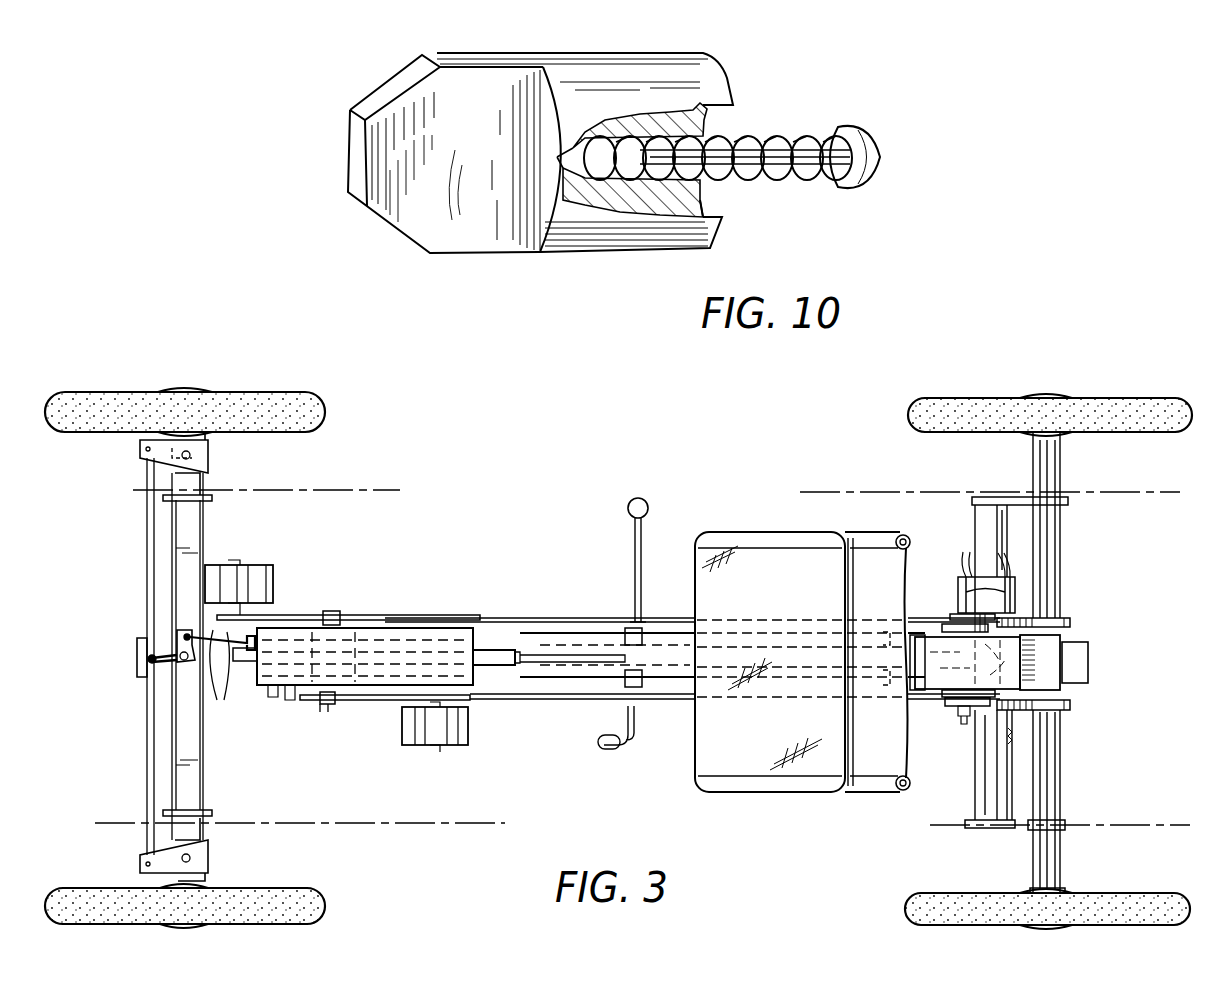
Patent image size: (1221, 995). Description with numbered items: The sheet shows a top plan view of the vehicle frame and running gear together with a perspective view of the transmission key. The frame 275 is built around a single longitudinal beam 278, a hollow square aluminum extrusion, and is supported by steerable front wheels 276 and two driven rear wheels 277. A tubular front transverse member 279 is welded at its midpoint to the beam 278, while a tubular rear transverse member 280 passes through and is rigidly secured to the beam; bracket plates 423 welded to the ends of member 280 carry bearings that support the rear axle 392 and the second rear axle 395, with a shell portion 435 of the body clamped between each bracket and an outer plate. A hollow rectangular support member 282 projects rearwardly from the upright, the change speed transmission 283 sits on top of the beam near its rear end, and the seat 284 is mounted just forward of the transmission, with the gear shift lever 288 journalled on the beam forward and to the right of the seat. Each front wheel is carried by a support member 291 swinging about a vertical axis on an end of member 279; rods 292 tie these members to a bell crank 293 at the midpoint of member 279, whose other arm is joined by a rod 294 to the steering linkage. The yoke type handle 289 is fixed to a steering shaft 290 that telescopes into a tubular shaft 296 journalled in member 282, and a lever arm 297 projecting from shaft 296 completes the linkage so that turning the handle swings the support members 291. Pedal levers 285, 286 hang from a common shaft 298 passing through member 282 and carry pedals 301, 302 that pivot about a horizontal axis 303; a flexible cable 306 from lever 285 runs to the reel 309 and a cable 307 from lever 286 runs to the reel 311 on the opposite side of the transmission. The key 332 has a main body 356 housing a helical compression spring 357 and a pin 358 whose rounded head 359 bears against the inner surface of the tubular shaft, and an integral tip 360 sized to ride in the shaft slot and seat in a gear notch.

In FIG. 10, the main body 356 is at (600, 73).
In FIG. 10, the helical compression spring 357 is at (780, 138).
In FIG. 10, the pin 358 is at (830, 150).
In FIG. 10, the head 359 is at (878, 145).
In FIG. 10, the tip 360 is at (428, 117).
In FIG. 10, the key 332 is at (378, 238).
In FIG. 3, the frame 275 is at (553, 628).
In FIG. 3, the steerable front wheels 276 is at (288, 398).
In FIG. 3, the driven rear wheels 277 is at (1125, 400).
In FIG. 3, the longitudinal beam 278 is at (137, 660).
In FIG. 3, the front transverse member 279 is at (203, 790).
In FIG. 3, the rear transverse member 280 is at (977, 525).
In FIG. 3, the support member 282 is at (435, 628).
In FIG. 3, the change speed transmission 283 is at (912, 690).
In FIG. 3, the seat 284 is at (800, 790).
In FIG. 3, the pedal lever 285 is at (360, 700).
In FIG. 3, the pedal lever 286 is at (302, 614).
In FIG. 3, the gear shift lever 288 is at (635, 528).
In FIG. 3, the yoke type handle 289 is at (605, 750).
In FIG. 3, the steering shaft 290 is at (525, 665).
In FIG. 3, the support member 291 is at (212, 458).
In FIG. 3, the rods 292 is at (147, 512).
In FIG. 3, the bell crank 293 is at (167, 678).
In FIG. 3, the rod 294 is at (222, 660).
In FIG. 3, the tubular shaft 296 is at (492, 650).
In FIG. 3, the lever arm 297 is at (177, 632).
In FIG. 3, the shaft 298 is at (320, 704).
In FIG. 3, the pedal 301 is at (458, 745).
In FIG. 3, the pedal 302 is at (250, 565).
In FIG. 3, the horizontal axis 303 is at (425, 748).
In FIG. 3, the flexible cable 306 is at (560, 696).
In FIG. 3, the cable 307 is at (387, 618).
In FIG. 3, the reel 309 is at (938, 706).
In FIG. 3, the reel 311 is at (945, 612).
In FIG. 3, the rear axle 392 is at (1050, 862).
In FIG. 3, the second rear axle 395 is at (1060, 457).
In FIG. 3, the bracket plates 423 is at (1040, 822).
In FIG. 3, the shell portion 435 is at (370, 825).